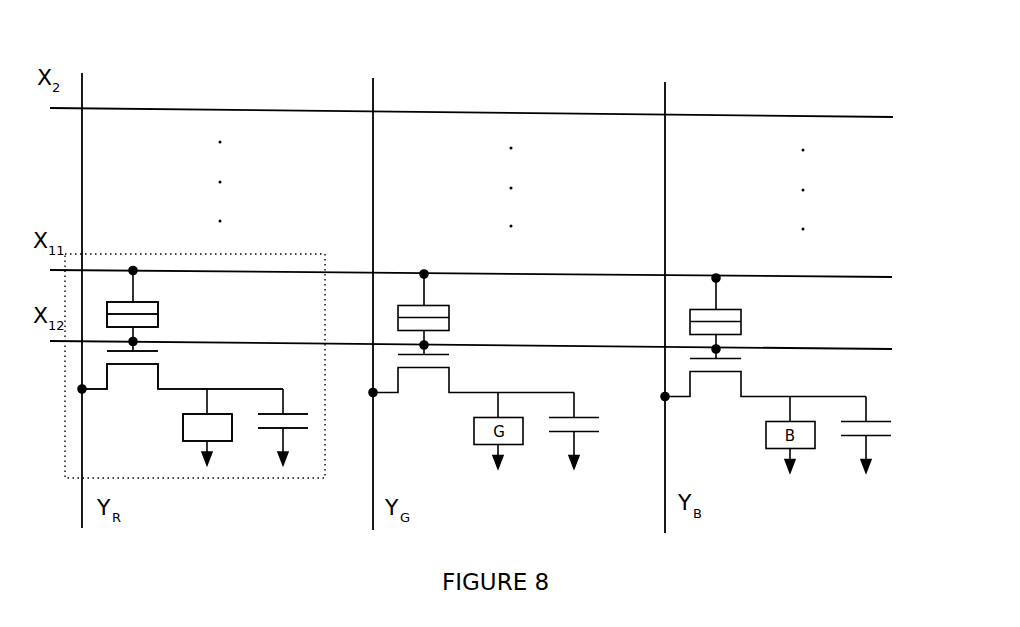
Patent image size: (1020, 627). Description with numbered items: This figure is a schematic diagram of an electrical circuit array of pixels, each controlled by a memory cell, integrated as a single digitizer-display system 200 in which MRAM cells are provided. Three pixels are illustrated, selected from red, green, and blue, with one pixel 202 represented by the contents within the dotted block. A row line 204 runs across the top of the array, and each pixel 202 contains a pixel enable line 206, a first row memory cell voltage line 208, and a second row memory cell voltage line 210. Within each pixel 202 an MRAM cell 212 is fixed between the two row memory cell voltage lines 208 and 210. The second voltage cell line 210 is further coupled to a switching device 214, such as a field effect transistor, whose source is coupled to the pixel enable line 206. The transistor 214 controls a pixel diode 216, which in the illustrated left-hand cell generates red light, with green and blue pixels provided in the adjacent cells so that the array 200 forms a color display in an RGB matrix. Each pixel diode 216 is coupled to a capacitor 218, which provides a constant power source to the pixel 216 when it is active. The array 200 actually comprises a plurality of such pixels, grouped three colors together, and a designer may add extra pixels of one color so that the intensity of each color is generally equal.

The single digitizer-display system 200 is at (778, 62).
The pixel 202 is at (202, 327).
The row line X2 204 is at (471, 74).
The pixel enable line 206 is at (129, 300).
The first row memory cell voltage line 208 is at (471, 254).
The second row memory cell voltage line 210 is at (471, 322).
The MRAM cell 212 is at (181, 305).
The switching device 214 is at (188, 358).
The pixel diode 216 is at (183, 425).
The capacitor 218 is at (313, 462).